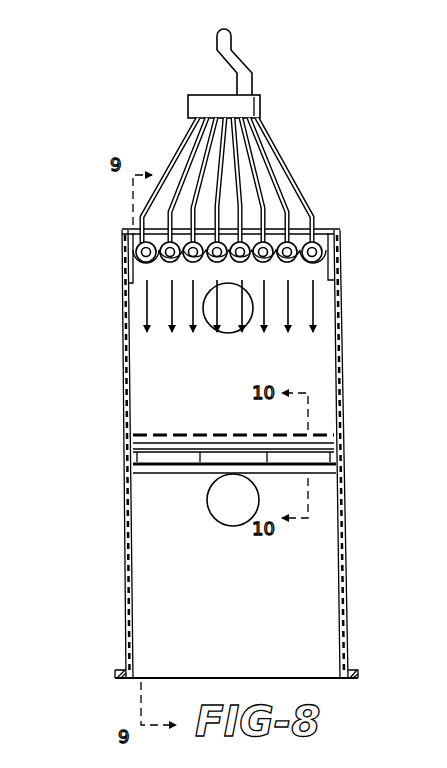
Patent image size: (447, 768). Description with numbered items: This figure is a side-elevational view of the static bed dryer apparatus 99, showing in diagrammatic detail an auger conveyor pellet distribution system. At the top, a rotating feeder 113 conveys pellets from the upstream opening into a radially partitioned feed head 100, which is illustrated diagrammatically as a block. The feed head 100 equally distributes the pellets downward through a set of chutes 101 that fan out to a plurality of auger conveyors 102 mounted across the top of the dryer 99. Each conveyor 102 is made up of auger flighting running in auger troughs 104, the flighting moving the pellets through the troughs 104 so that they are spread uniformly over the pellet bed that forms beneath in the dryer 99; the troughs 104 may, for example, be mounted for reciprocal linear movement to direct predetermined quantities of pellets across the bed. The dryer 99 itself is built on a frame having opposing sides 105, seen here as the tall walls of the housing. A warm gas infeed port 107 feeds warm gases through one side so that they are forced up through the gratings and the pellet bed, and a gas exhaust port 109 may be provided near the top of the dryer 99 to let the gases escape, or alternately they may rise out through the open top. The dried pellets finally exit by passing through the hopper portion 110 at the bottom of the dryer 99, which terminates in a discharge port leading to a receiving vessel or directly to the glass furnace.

The static bed dryer apparatus 99 is at (350, 168).
The radially partitioned feed head 100 is at (260, 110).
The chutes 101 is at (190, 160).
The auger conveyors 102 is at (122, 231).
The auger troughs 104 is at (165, 264).
The opposing sides 105 is at (123, 368).
The warm gas infeed port 107 is at (220, 527).
The gas exhaust port 109 is at (230, 333).
The hopper portion 110 is at (120, 598).
The rotating feeder 113 is at (232, 46).